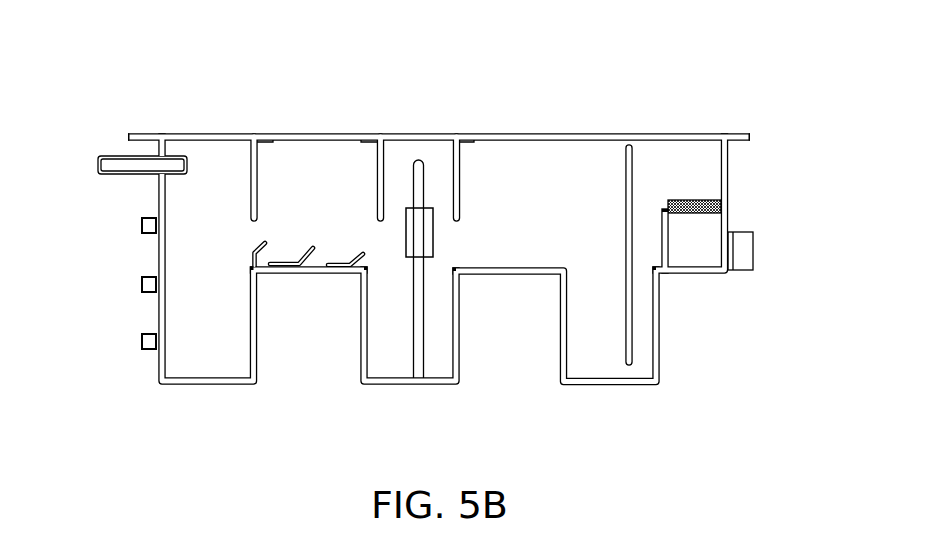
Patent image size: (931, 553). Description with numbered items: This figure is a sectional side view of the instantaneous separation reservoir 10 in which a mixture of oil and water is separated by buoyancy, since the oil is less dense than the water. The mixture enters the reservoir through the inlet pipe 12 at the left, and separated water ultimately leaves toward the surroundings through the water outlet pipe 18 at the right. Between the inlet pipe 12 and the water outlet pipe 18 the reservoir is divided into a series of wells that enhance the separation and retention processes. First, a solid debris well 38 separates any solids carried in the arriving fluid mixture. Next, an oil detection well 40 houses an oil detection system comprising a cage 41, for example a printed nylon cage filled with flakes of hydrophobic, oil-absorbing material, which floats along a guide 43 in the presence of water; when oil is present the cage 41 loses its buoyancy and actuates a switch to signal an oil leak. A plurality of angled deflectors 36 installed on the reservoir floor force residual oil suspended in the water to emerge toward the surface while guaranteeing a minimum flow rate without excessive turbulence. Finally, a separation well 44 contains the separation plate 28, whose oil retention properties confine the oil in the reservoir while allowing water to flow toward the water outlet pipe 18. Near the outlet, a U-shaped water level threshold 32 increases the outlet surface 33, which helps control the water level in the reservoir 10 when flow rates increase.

The separation reservoir 10 is at (251, 85).
The inlet pipe 12 is at (118, 163).
The water outlet pipe 18 is at (753, 243).
The separation plate 28 is at (632, 320).
The water level threshold 32 is at (668, 233).
The outlet surface 33 is at (697, 202).
The deflectors 36 is at (282, 256).
The solid debris well 38 is at (203, 365).
The oil detection well 40 is at (394, 365).
The cage 41 is at (431, 238).
The guide 43 is at (420, 338).
The separation well 44 is at (596, 364).